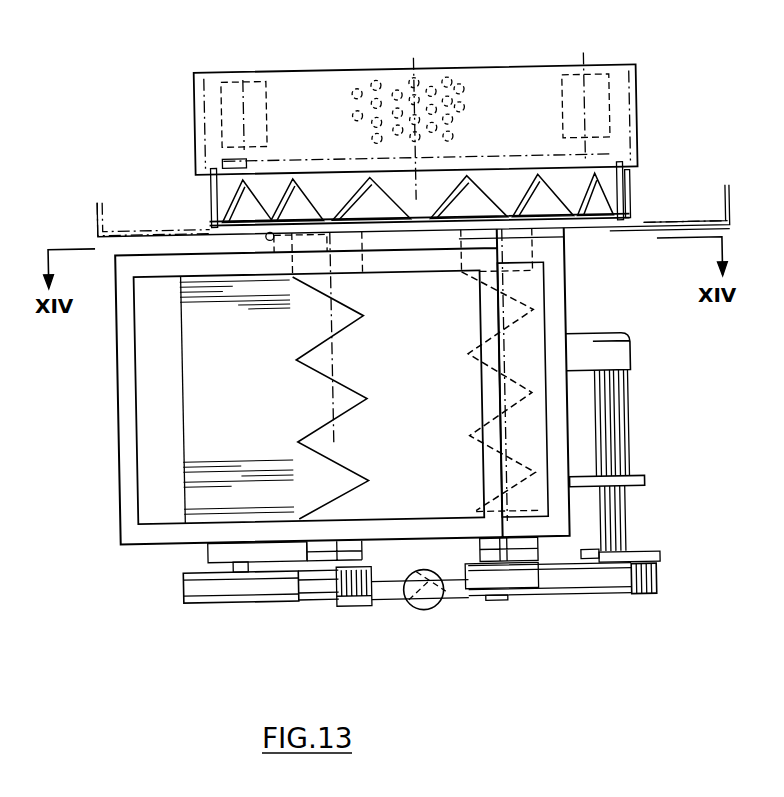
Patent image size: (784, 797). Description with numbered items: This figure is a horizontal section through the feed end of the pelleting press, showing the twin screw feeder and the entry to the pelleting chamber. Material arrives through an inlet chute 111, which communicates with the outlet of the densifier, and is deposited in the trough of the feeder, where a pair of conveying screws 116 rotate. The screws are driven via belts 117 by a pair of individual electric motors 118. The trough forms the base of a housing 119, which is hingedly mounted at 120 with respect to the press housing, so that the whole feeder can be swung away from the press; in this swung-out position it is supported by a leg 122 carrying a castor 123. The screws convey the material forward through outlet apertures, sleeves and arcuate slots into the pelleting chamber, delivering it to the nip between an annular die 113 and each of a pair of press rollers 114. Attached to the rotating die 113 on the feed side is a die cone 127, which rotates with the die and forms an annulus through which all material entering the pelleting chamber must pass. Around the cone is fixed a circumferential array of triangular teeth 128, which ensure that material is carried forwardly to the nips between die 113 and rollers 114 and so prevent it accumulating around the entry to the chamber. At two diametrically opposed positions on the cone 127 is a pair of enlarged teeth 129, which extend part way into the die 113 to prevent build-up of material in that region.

The inlet chute 111 is at (492, 312).
The annular die 113 is at (196, 104).
The press rollers 114 is at (268, 88).
The conveying screws 116 is at (466, 352).
The belts 117 is at (657, 573).
The electric motors 118 is at (613, 470).
The housing 119 is at (558, 322).
The hinge mounting 120 is at (272, 236).
The leg 122 is at (450, 603).
The castor 123 is at (422, 617).
The die cone 127 is at (223, 220).
The triangular teeth 128 is at (363, 200).
The enlarged teeth 129 is at (220, 208).